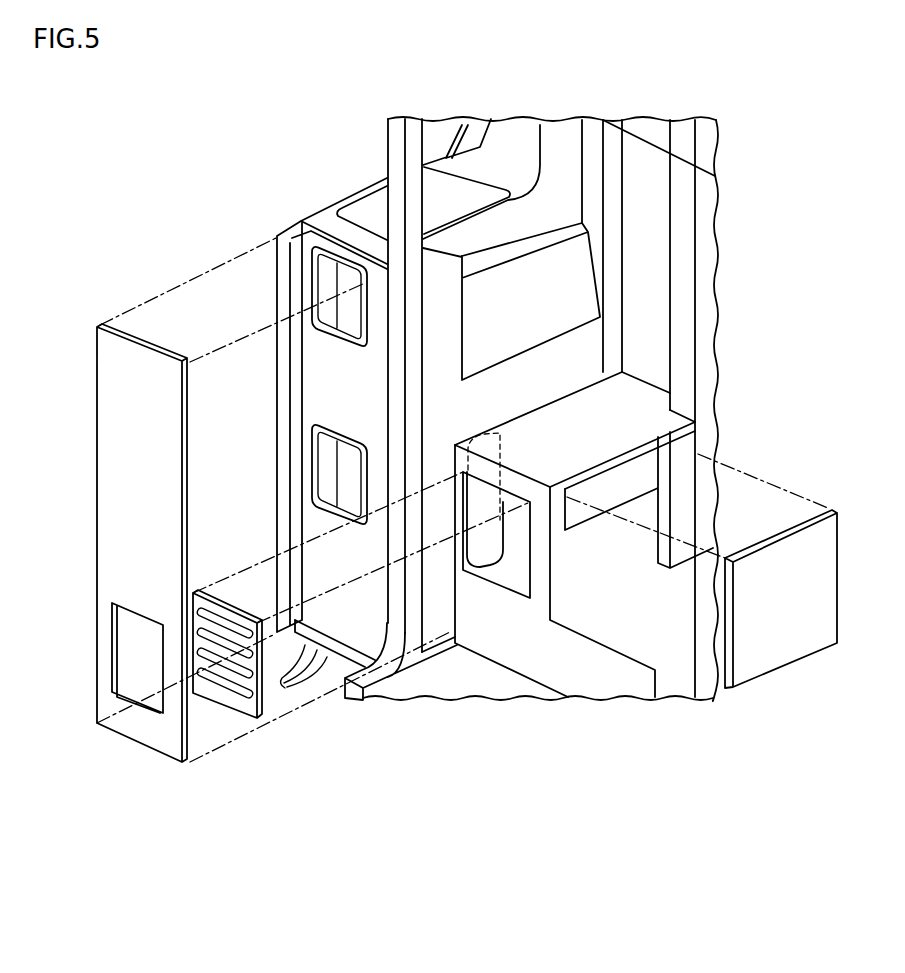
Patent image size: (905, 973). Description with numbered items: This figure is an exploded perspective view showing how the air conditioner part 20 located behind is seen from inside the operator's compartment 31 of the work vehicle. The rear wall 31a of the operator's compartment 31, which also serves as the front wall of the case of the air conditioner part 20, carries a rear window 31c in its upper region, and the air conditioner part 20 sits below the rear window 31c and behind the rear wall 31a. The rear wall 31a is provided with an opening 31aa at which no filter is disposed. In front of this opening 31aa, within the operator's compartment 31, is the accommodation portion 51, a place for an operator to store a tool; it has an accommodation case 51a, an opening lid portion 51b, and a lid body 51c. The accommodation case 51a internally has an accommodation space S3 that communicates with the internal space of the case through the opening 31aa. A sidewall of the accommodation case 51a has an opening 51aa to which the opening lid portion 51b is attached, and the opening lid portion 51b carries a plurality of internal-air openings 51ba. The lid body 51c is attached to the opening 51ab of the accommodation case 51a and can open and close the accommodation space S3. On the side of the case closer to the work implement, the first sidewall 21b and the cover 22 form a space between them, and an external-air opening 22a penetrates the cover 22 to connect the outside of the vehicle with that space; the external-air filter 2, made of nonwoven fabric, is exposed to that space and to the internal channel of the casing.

The external-air filter 2 is at (333, 291).
The air conditioner part 20 is at (241, 470).
The first sidewall 21b is at (300, 433).
The cover 22 is at (109, 543).
The external-air opening 22a is at (118, 636).
The operator's compartment 31 is at (559, 416).
The rear wall 31a is at (582, 353).
The opening 31aa is at (486, 555).
The rear window 31c is at (540, 148).
The accommodation portion 51 is at (641, 555).
The accommodation case 51a is at (633, 430).
The opening 51aa is at (520, 556).
The opening 51ab is at (665, 477).
The opening lid portion 51b is at (361, 632).
The internal-air opening 51ba is at (218, 592).
The lid body 51c is at (773, 625).
The accommodation space S3 is at (597, 535).